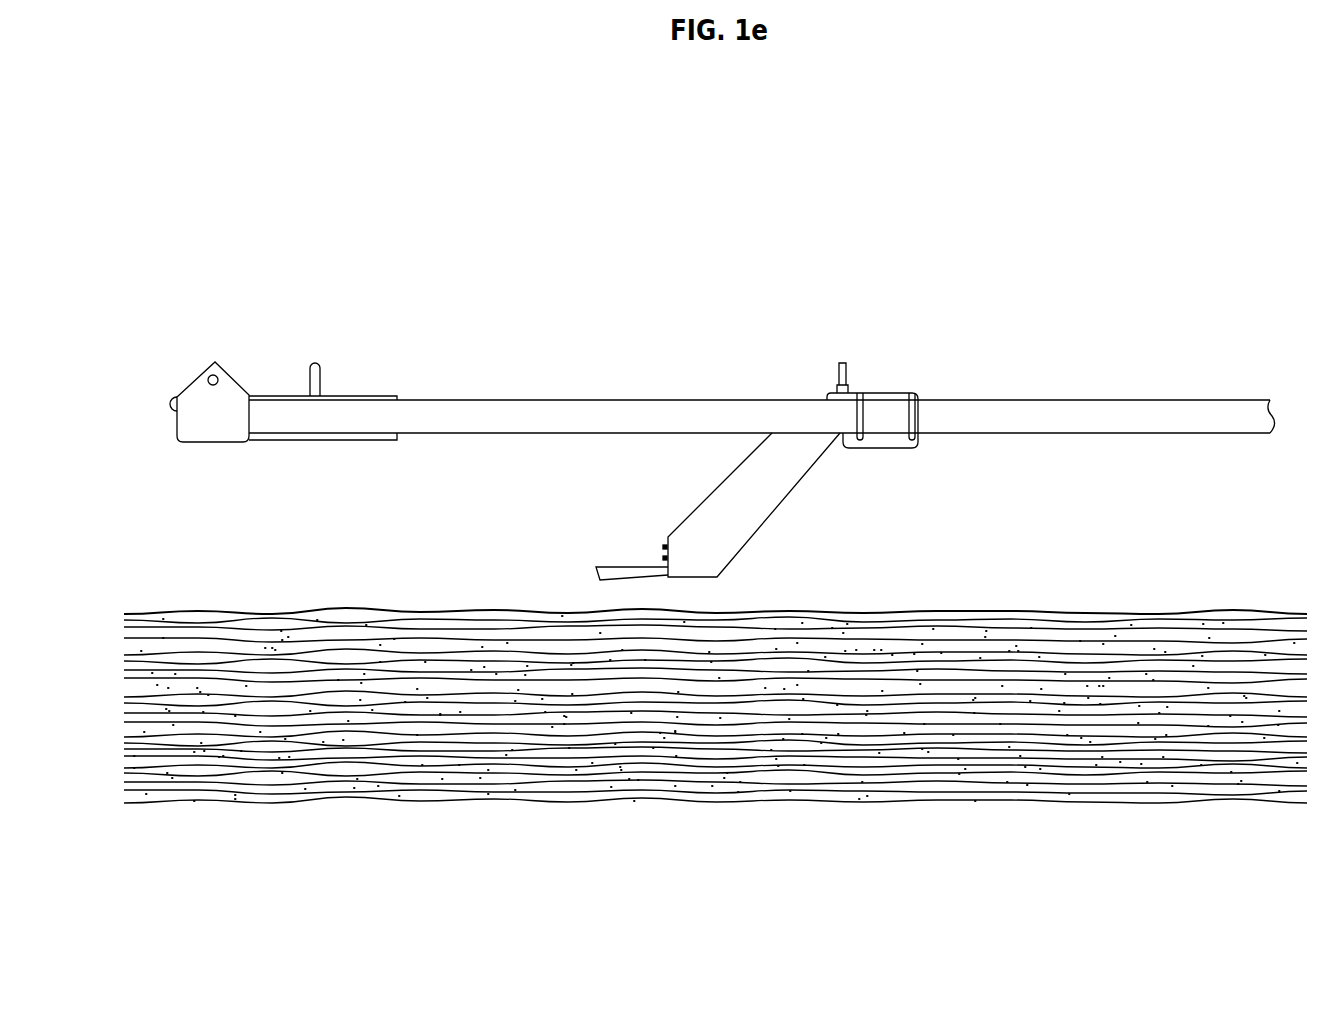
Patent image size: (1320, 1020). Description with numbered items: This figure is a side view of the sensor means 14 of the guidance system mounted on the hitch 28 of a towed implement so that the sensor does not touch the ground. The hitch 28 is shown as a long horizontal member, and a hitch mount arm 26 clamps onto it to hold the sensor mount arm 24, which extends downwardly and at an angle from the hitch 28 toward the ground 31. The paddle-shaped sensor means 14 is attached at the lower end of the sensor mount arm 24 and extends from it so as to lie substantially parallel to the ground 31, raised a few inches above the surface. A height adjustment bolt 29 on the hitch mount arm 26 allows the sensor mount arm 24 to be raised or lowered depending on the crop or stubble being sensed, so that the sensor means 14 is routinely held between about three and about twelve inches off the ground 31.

The sensor means 14 is at (597, 572).
The sensor mount arm 24 is at (732, 517).
The hitch mount arm 26 is at (860, 393).
The hitch 28 is at (1060, 412).
The height adjustment bolt 29 is at (838, 365).
The ground 31 is at (415, 612).